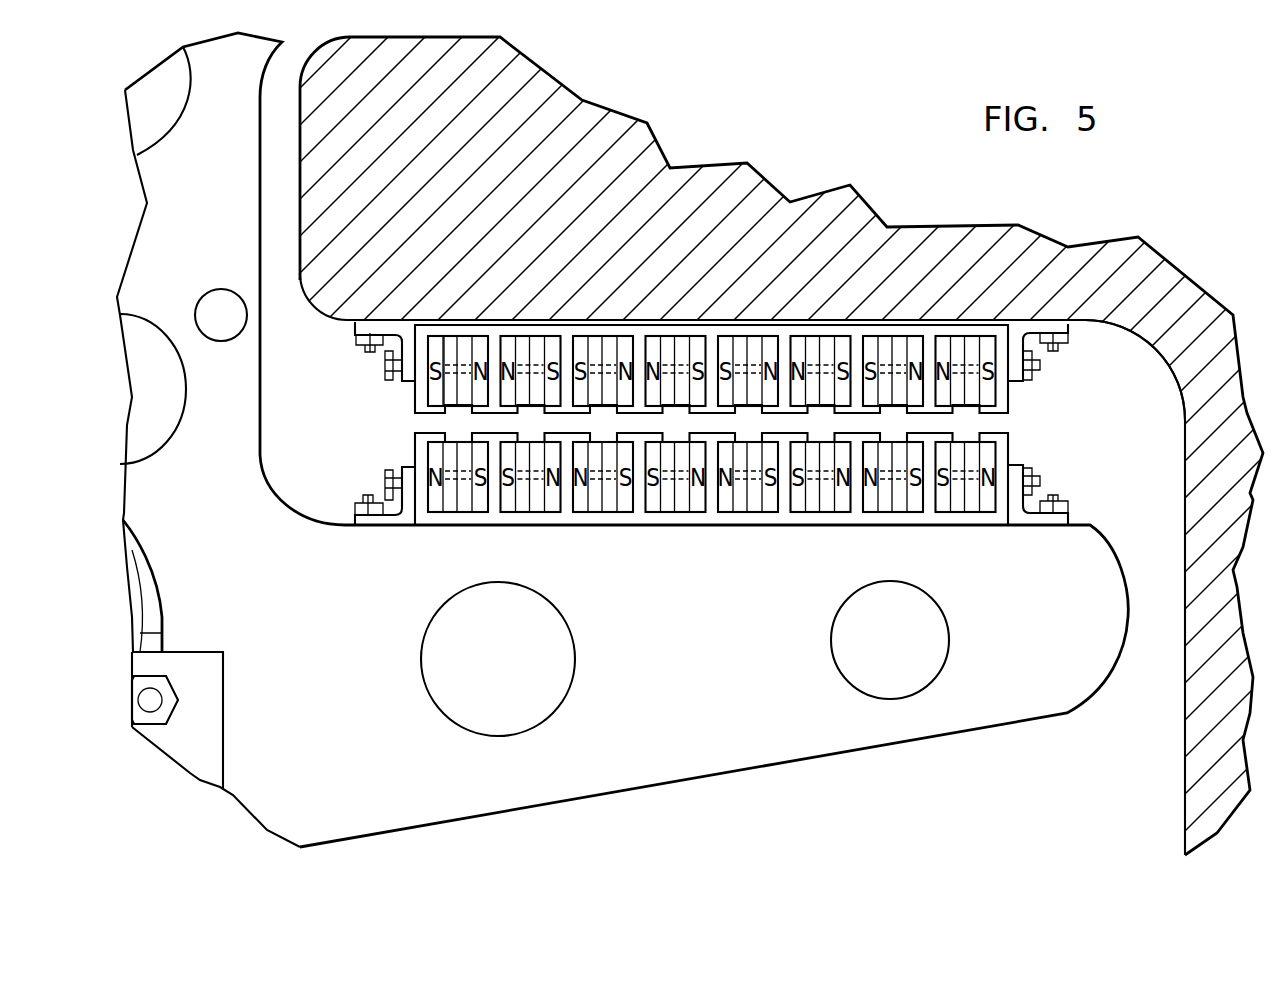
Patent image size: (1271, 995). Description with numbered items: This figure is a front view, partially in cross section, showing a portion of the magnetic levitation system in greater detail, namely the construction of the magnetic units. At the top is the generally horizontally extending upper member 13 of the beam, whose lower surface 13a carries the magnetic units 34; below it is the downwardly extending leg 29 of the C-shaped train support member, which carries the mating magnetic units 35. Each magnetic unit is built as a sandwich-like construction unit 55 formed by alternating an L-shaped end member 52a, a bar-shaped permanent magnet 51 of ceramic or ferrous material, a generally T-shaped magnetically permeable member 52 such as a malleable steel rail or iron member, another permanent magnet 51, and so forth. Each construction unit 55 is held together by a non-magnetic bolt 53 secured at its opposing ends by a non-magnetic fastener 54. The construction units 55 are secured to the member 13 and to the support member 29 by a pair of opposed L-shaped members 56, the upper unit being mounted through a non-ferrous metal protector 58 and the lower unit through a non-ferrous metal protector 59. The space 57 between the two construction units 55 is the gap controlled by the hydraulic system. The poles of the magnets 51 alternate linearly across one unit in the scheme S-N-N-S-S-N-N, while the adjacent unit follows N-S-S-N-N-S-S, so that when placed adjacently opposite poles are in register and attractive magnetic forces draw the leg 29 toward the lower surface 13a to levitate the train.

The horizontally extending upper member 13 is at (515, 169).
The lower surface 13a is at (1083, 325).
The downwardly extending leg 29 is at (670, 670).
The magnetic units 34 is at (375, 358).
The mating magnetic units 35 is at (370, 490).
The bar-shaped permanent magnet 51 is at (437, 343).
The T-shaped magnetically permeable member 52 is at (480, 345).
The L-shaped end member 52a is at (364, 338).
The non-magnetic bolt 53 is at (390, 370).
The non-magnetic fastener 54 is at (394, 383).
The sandwich-like construction unit 55 is at (452, 343).
The L-shaped member 56 is at (350, 325).
The space between construction units 57 is at (457, 423).
The non-ferrous metal protector 58 is at (781, 322).
The non-ferrous metal protector 59 is at (595, 523).